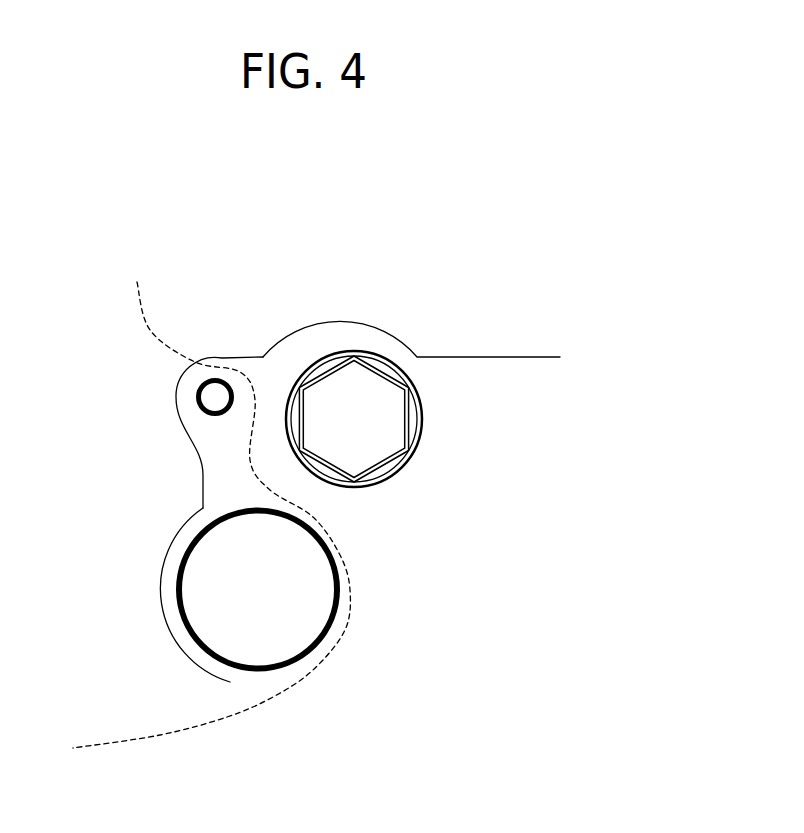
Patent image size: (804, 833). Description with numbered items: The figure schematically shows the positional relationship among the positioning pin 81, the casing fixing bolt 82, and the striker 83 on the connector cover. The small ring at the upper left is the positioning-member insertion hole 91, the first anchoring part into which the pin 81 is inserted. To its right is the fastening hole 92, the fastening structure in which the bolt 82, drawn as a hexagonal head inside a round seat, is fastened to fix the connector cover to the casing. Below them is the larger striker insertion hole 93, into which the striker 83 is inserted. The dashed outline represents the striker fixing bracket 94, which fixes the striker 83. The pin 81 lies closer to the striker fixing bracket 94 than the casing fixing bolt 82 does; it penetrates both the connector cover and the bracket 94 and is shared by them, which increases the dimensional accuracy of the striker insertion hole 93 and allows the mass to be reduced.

The positioning pin 81 is at (217, 393).
The casing fixing bolt 82 is at (350, 387).
The striker 83 is at (295, 588).
The positioning-member insertion hole 91 is at (195, 393).
The fastening hole 92 is at (427, 400).
The striker insertion hole 93 is at (190, 618).
The striker fixing bracket 94 is at (313, 670).